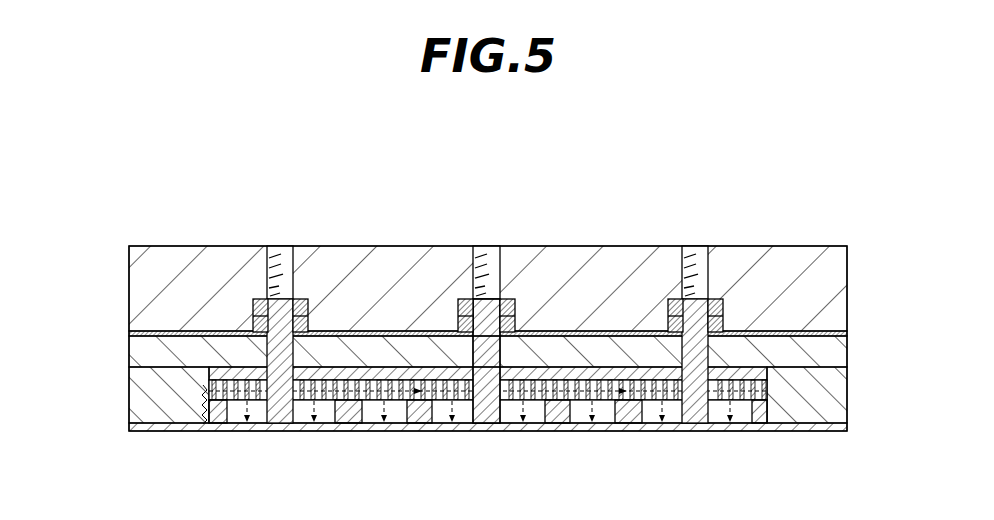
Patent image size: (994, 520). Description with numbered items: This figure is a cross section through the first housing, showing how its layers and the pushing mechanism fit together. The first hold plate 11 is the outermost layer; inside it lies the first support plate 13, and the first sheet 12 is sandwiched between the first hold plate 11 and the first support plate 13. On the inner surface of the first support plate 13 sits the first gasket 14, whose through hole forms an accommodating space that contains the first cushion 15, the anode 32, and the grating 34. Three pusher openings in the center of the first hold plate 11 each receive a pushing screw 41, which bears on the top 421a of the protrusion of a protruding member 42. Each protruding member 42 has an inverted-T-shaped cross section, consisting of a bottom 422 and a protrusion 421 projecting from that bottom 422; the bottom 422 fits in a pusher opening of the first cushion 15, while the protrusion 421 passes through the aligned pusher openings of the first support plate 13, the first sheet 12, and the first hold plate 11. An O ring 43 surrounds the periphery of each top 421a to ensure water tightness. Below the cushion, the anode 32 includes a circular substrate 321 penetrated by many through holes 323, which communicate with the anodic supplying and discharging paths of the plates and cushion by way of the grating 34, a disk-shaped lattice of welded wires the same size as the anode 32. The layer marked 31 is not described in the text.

The first hold plate 11 is at (848, 293).
The first sheet 12 is at (848, 333).
The first support plate 13 is at (848, 355).
The first gasket 14 is at (127, 418).
The first cushion 15 is at (554, 377).
The bottom plate 31 is at (843, 428).
The anode 32 is at (202, 412).
The substrate 321 is at (760, 415).
The through holes 323 is at (615, 418).
The grating 34 is at (199, 389).
The pushing screw 41 is at (281, 246).
The protruding member 42 is at (262, 354).
The protrusion 421 is at (452, 377).
The top of the protrusion 421a is at (485, 306).
The bottom 422 is at (457, 351).
The O ring 43 is at (303, 300).